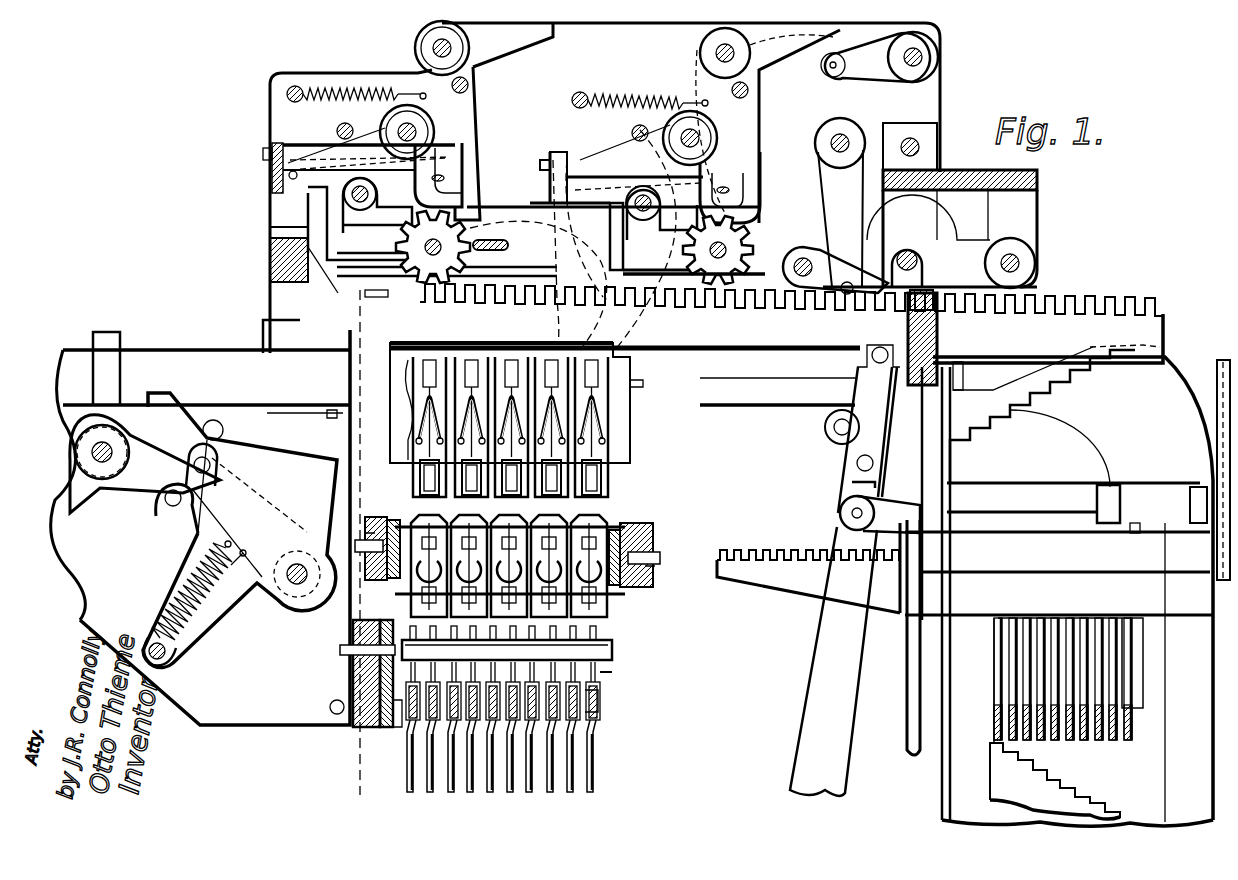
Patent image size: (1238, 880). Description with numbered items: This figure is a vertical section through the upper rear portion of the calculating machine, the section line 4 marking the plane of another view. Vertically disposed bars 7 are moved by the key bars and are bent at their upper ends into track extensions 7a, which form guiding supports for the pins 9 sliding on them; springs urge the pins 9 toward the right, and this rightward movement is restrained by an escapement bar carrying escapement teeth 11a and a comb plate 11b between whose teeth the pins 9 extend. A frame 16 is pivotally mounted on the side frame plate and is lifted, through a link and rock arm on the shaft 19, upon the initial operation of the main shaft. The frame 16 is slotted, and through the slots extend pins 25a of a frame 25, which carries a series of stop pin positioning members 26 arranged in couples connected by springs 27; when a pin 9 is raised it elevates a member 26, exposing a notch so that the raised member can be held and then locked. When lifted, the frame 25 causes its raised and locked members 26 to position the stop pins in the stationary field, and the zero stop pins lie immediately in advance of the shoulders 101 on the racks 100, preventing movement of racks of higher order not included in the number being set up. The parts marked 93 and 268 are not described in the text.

The section line 4 is at (348, 546).
The vertically disposed bars 7 is at (583, 790).
The track extensions 7a is at (600, 712).
The pins 9 is at (612, 672).
The escapement teeth 11a is at (345, 648).
The comb plate 11b is at (605, 650).
The frame 16 is at (378, 516).
The shaft 19 is at (433, 247).
The frame 25 is at (366, 533).
The pins 25a is at (370, 548).
The stop pin positioning members 26 is at (422, 598).
The springs 27 is at (487, 567).
The carrier 93 is at (608, 470).
The racks 100 is at (791, 323).
The shoulders 101 is at (618, 350).
The gear 268 is at (718, 250).